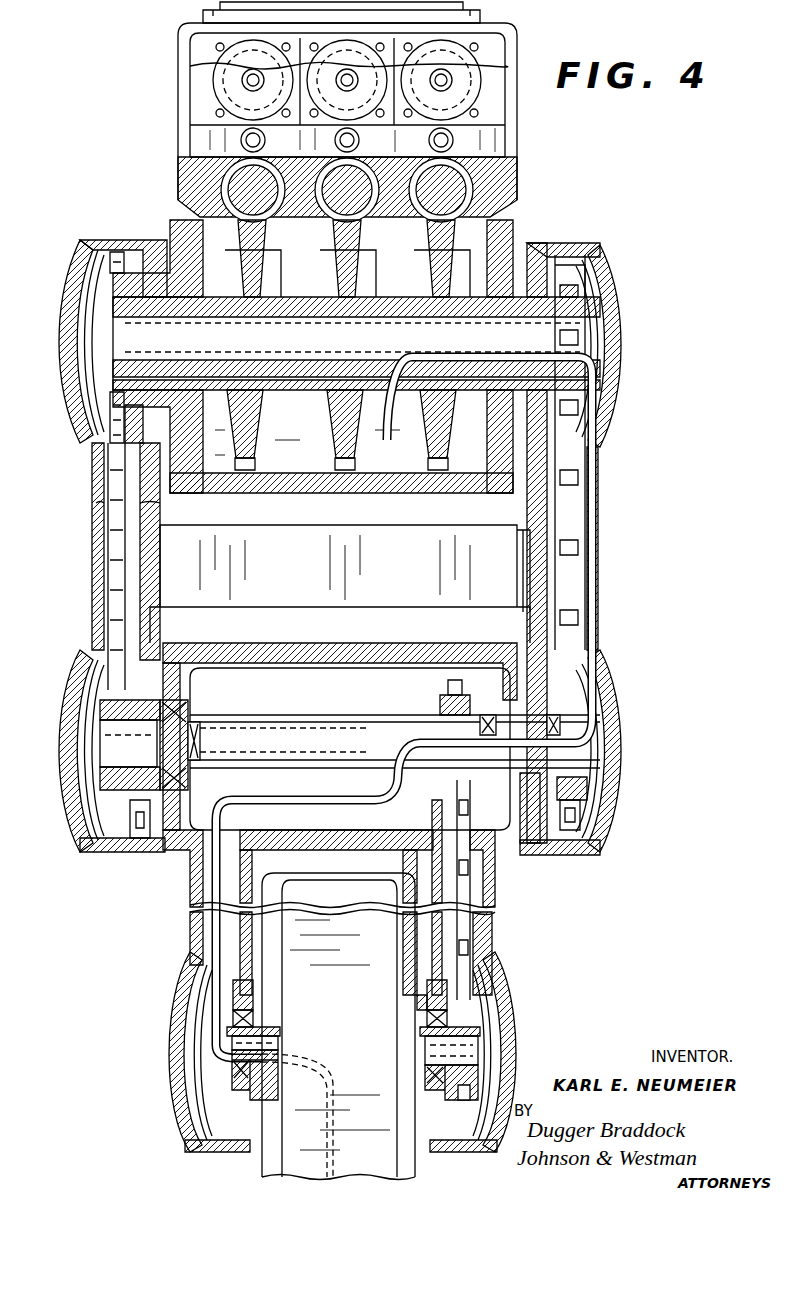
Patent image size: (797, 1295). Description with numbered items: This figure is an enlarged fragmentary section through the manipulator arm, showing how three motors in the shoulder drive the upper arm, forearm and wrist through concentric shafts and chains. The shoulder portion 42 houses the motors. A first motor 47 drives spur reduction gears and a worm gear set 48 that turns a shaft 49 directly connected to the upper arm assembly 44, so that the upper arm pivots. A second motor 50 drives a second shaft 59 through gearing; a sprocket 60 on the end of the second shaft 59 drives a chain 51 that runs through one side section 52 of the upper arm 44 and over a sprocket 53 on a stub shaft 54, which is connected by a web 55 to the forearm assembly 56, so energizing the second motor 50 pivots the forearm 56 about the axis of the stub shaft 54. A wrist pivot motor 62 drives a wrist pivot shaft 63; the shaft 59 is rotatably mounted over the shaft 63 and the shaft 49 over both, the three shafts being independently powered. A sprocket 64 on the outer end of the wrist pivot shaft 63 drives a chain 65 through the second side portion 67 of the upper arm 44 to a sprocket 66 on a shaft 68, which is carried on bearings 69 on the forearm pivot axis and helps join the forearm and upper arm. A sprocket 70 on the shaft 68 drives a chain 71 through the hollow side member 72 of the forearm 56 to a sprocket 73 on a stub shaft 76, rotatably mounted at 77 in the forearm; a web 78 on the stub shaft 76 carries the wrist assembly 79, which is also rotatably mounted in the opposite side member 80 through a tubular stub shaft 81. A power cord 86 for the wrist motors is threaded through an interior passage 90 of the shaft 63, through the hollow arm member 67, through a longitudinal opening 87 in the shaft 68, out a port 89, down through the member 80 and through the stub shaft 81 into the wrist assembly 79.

The shoulder portion 42 is at (185, 135).
The upper arm assembly 44 is at (590, 488).
The first motor 47 is at (228, 80).
The worm gear set 48 is at (268, 224).
The shaft 49 is at (216, 292).
The second motor 50 is at (372, 75).
The chain 51 is at (120, 668).
The side section 52 is at (100, 636).
The sprocket 53 is at (112, 782).
The stub shaft 54 is at (112, 742).
The web 55 is at (170, 860).
The forearm assembly 56 is at (485, 885).
The second shaft 59 is at (217, 320).
The sprocket 60 is at (120, 388).
The wrist pivot motor 62 is at (468, 92).
The wrist pivot shaft 63 is at (398, 310).
The sprocket 64 is at (567, 287).
The chain 65 is at (563, 540).
The sprocket 66 is at (580, 788).
The second side portion 67 is at (592, 578).
The shaft 68 is at (372, 715).
The bearings 69 is at (188, 727).
The sprocket 70 is at (450, 698).
The chain 71 is at (473, 866).
The hollow side member 72 is at (490, 938).
The sprocket 73 is at (478, 1020).
The stub shaft 76 is at (455, 1055).
The rotatable mounting 77 is at (428, 1085).
The web 78 is at (430, 1013).
The wrist assembly 79 is at (275, 950).
The side member 80 is at (192, 948).
The stub shaft 81 is at (232, 1068).
The power cord 86 is at (598, 375).
The longitudinal opening 87 is at (372, 742).
The port 89 is at (414, 812).
The interior passage 90 is at (575, 345).